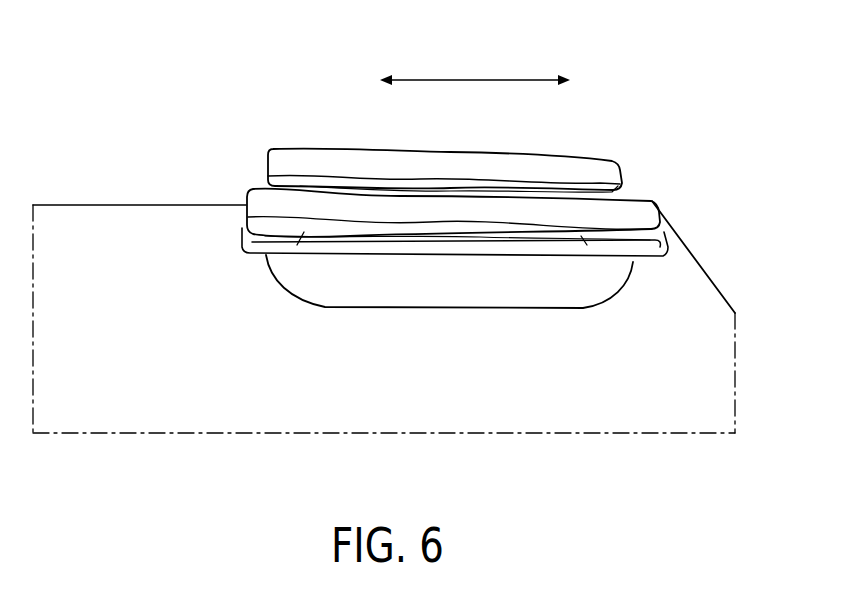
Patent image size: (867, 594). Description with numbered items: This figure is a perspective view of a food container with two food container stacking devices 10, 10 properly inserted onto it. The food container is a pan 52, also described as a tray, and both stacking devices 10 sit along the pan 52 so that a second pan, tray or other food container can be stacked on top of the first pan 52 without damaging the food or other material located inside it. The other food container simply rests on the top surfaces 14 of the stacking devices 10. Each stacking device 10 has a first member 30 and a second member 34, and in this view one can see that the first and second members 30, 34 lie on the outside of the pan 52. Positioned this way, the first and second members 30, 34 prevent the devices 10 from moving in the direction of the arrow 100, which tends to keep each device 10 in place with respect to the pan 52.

The arrow 100 is at (483, 79).
The food container stacking device 10 is at (640, 221).
The top surface 14 is at (268, 203).
The first member 30 is at (250, 228).
The second member 34 is at (657, 240).
The pan 52 is at (650, 257).